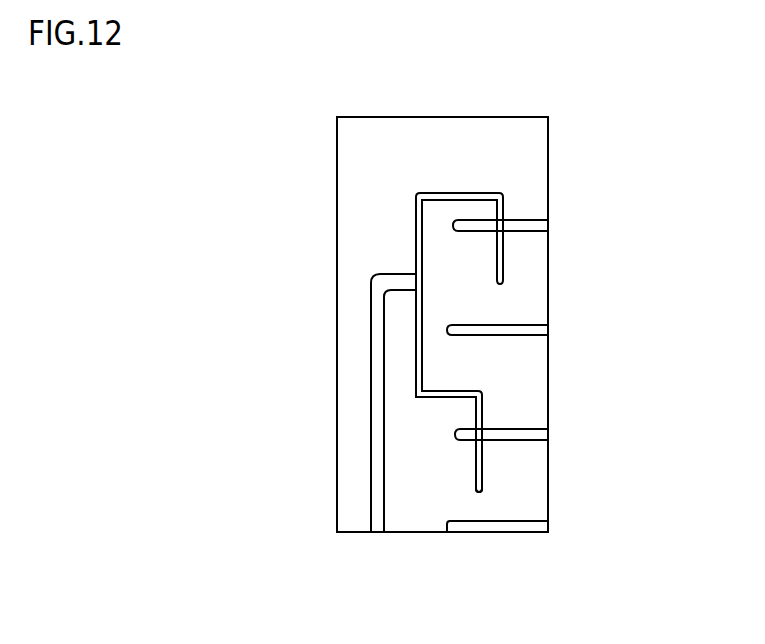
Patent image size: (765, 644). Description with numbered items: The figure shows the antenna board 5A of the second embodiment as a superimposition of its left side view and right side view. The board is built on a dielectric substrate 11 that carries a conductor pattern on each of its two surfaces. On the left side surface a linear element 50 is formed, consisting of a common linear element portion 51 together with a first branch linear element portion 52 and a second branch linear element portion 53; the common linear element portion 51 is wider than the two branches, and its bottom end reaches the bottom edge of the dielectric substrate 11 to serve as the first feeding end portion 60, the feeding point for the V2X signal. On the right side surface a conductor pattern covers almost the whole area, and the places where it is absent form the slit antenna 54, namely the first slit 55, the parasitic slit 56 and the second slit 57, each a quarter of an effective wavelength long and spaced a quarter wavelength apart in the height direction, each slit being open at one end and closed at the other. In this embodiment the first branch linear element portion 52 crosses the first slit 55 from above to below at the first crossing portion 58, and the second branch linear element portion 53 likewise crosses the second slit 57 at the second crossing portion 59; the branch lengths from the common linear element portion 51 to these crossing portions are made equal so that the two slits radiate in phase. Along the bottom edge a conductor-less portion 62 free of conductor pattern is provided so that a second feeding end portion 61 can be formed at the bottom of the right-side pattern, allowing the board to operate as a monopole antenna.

The antenna board 5A is at (337, 157).
The dielectric substrate 11 is at (337, 228).
The linear element 50 is at (370, 412).
The common linear element portion 51 is at (375, 487).
The first branch linear element portion 52 is at (462, 193).
The second branch linear element portion 53 is at (477, 473).
The slit antenna 54 is at (637, 255).
The first slit 55 is at (547, 226).
The parasitic slit 56 is at (548, 330).
The second slit 57 is at (547, 432).
The first crossing portion 58 is at (505, 222).
The second crossing portion 59 is at (480, 436).
The first feeding end portion 60 is at (377, 534).
The second feeding end portion 61 is at (548, 531).
The conductor-less portion 62 is at (487, 532).